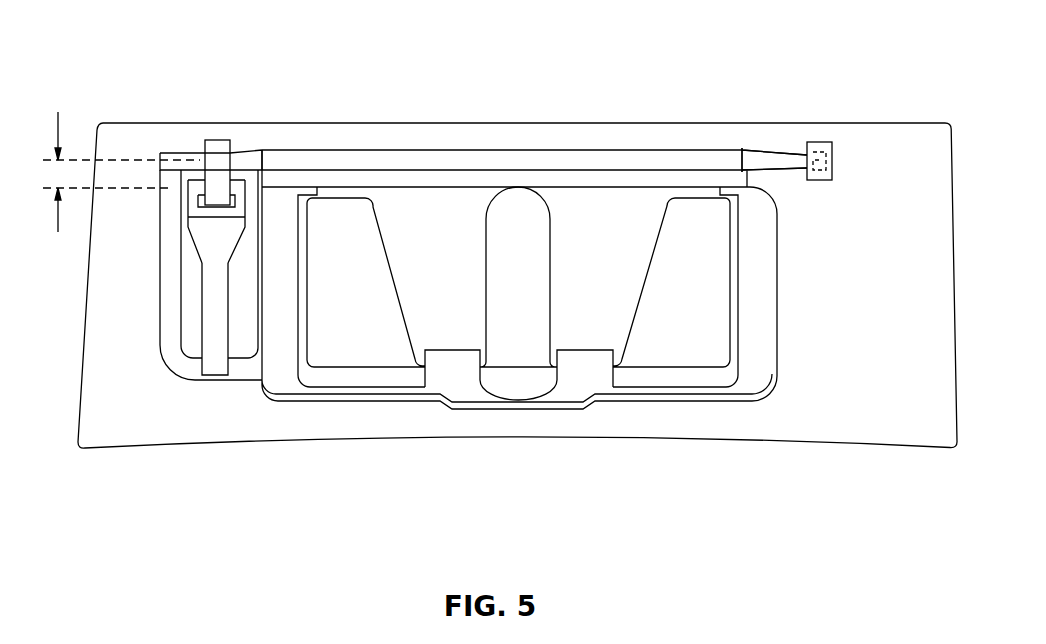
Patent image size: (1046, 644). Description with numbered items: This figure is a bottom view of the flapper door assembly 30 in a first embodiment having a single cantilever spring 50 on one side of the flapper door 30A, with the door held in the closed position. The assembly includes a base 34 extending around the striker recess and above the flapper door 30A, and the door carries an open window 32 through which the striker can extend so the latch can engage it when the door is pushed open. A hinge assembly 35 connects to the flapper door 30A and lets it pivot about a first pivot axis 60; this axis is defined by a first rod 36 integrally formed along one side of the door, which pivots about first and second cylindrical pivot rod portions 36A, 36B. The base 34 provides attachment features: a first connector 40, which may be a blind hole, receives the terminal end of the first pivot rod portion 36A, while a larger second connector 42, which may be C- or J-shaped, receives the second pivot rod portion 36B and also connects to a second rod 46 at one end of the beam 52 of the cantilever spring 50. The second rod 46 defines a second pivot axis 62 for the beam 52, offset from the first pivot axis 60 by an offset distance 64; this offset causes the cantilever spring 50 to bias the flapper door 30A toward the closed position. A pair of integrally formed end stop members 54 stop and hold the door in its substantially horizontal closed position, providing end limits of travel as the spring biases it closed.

The flapper door assembly 30 is at (587, 166).
The flapper door 30A is at (610, 253).
The open window 32 is at (518, 235).
The base 34 is at (875, 393).
The hinge assembly 35 is at (246, 114).
The first rod 36 is at (410, 162).
The first pivot rod portion 36A is at (837, 150).
The second pivot rod portion 36B is at (173, 152).
The first connector 40 is at (817, 142).
The second connector 42 is at (220, 150).
The second rod 46 is at (222, 240).
The cantilever spring 50 is at (200, 284).
The beam 52 is at (237, 185).
The end stop members 54 is at (450, 360).
The first pivot axis 60 is at (112, 158).
The second pivot axis 62 is at (147, 190).
The offset distance 64 is at (59, 127).